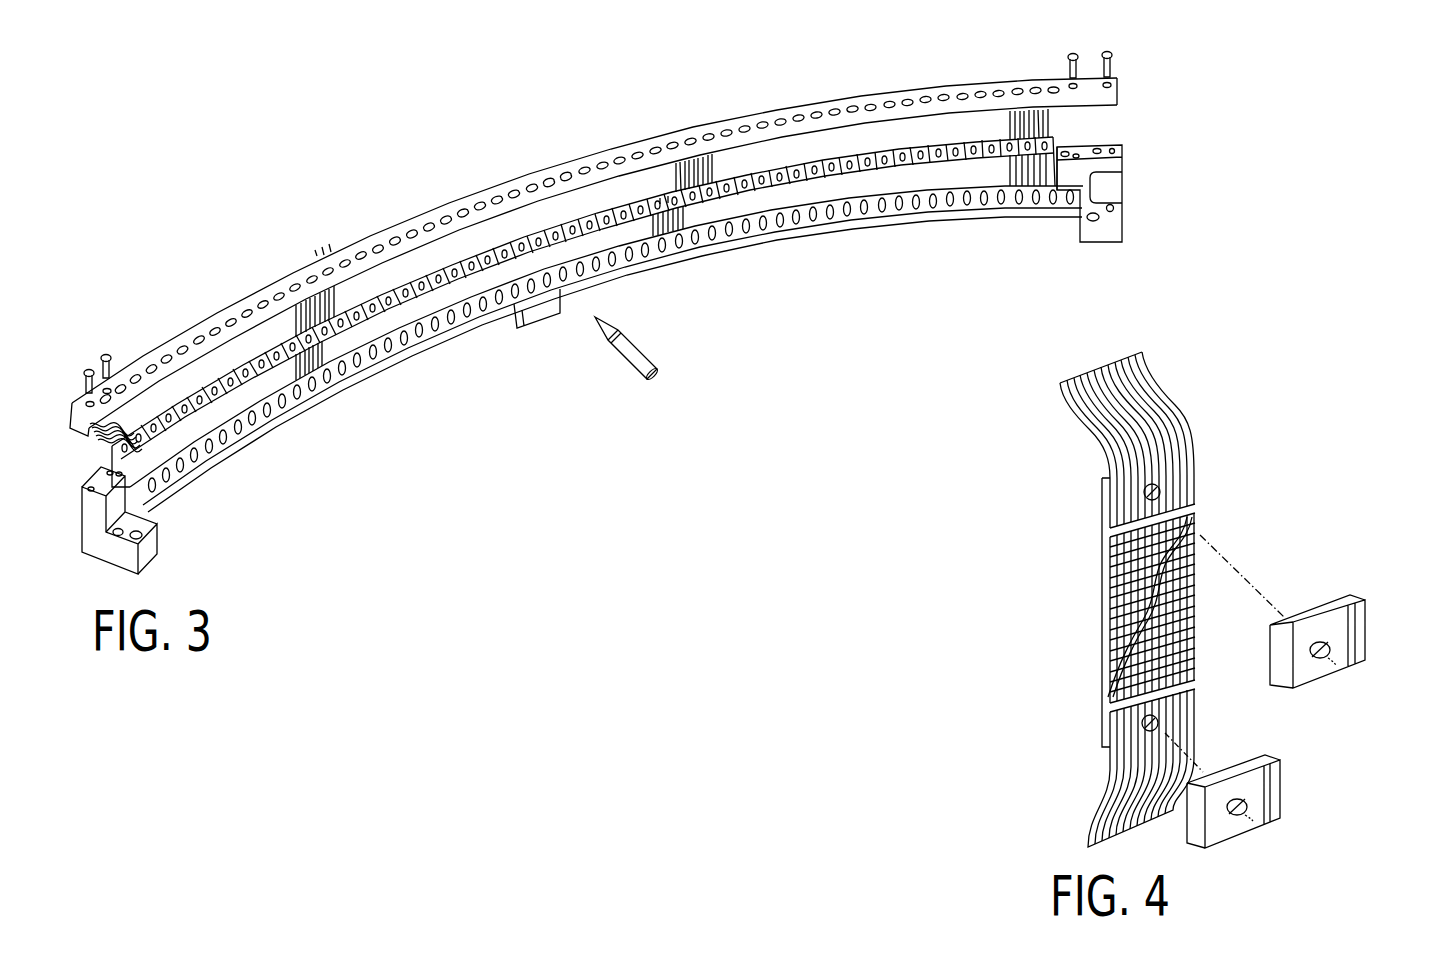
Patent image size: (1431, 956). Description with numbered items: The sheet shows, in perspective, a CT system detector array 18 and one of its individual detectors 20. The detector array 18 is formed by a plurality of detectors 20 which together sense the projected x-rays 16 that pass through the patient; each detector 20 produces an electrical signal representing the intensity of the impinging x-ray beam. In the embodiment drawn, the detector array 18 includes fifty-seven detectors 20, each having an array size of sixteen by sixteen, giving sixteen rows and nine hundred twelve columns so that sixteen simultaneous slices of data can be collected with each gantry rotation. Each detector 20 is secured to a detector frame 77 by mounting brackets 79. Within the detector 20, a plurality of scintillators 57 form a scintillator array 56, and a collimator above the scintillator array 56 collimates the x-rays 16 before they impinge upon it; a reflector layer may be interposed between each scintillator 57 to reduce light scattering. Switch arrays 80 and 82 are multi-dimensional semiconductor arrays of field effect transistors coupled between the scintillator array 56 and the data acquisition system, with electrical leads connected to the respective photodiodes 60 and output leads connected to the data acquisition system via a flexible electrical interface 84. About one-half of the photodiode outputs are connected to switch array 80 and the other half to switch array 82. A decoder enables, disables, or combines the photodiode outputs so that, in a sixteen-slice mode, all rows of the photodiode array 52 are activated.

In FIG. 3, the x-rays 16 is at (636, 366).
In FIG. 3, the detector array 18 is at (470, 178).
In FIG. 3, the detector 20 is at (303, 296).
In FIG. 4, the detector 20 is at (1190, 599).
In FIG. 3, the photodiode array 52 is at (1063, 141).
In FIG. 4, the photodiode array 52 is at (1103, 688).
In FIG. 3, the scintillator array 56 is at (934, 178).
In FIG. 4, the scintillator array 56 is at (1206, 588).
In FIG. 4, the scintillator 57 is at (1196, 658).
In FIG. 4, the photodiode 60 is at (1120, 612).
In FIG. 3, the detector frame 77 is at (112, 454).
In FIG. 4, the mounting bracket 79 is at (1338, 618).
In FIG. 4, the switch array 80 is at (1110, 536).
In FIG. 4, the switch array 82 is at (1195, 688).
In FIG. 4, the flexible electrical interface 84 is at (1185, 425).